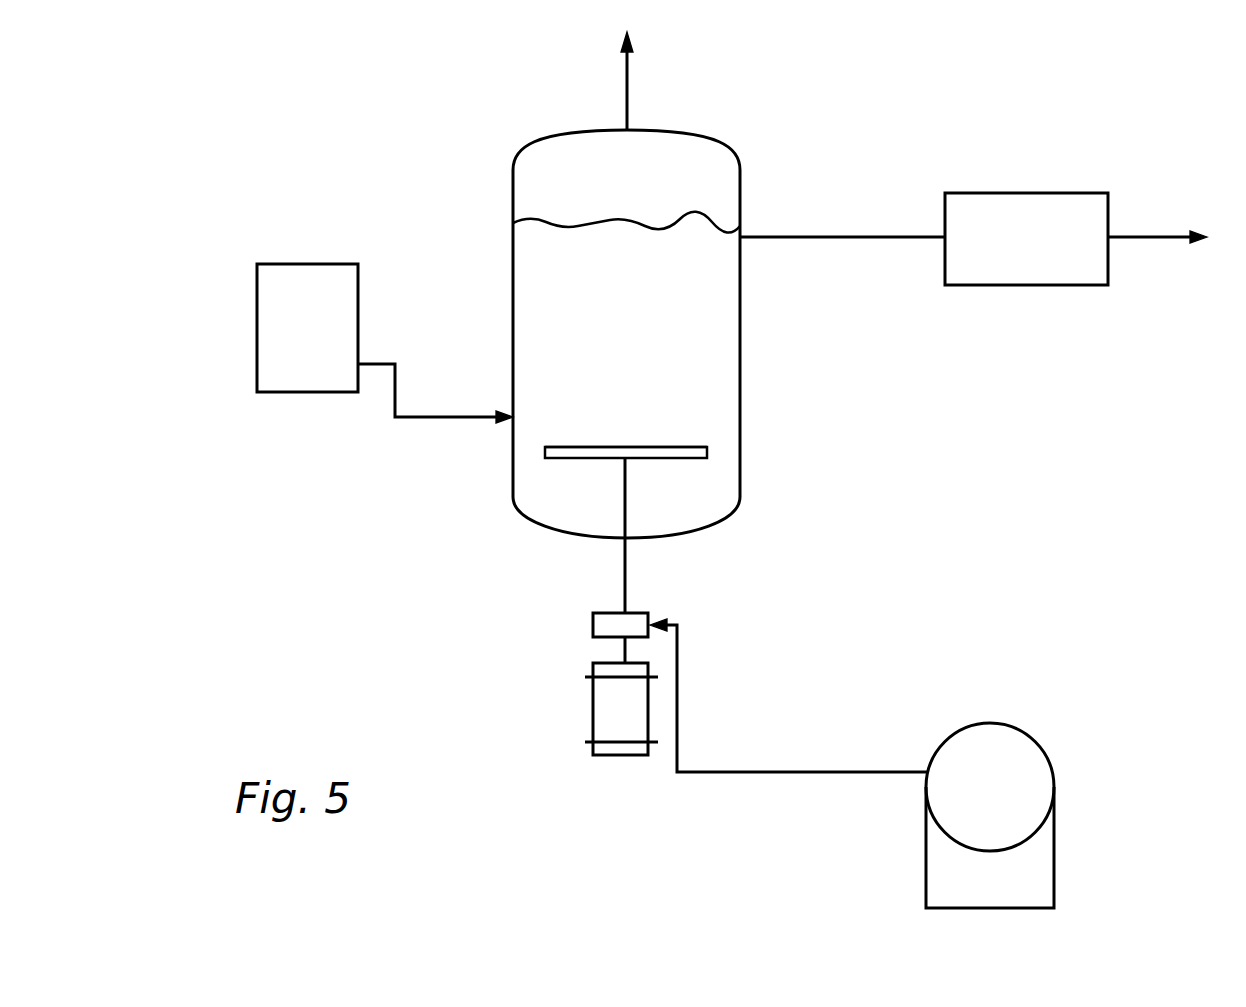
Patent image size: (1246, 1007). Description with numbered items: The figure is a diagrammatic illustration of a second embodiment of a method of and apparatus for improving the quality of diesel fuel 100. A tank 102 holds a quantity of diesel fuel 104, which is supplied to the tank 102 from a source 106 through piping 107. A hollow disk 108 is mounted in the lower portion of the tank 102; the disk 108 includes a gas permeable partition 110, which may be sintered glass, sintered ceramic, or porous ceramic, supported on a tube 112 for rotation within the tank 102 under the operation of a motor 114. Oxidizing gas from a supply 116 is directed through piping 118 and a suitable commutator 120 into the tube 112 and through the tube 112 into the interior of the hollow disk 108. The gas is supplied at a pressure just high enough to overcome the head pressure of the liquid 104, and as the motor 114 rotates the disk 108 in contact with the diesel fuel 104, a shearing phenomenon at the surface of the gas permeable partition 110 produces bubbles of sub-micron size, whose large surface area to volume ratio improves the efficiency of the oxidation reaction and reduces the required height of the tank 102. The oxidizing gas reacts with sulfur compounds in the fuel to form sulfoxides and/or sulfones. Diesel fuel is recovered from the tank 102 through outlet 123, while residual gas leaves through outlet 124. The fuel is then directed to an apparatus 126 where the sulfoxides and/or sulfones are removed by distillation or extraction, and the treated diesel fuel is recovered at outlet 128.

The apparatus for improving the quality of diesel fuel 100 is at (435, 105).
The tank 102 is at (513, 272).
The diesel fuel 104 is at (620, 307).
The source 106 is at (250, 342).
The piping 107 is at (455, 430).
The hollow disk 108 is at (712, 452).
The gas permeable partition 110 is at (663, 443).
The tube 112 is at (627, 563).
The motor 114 is at (580, 712).
The supply 116 is at (997, 700).
The piping 118 is at (767, 772).
The commutator 120 is at (580, 617).
The outlet 123 is at (800, 200).
The outlet 124 is at (650, 92).
The apparatus 126 is at (1000, 193).
The outlet 128 is at (1142, 240).